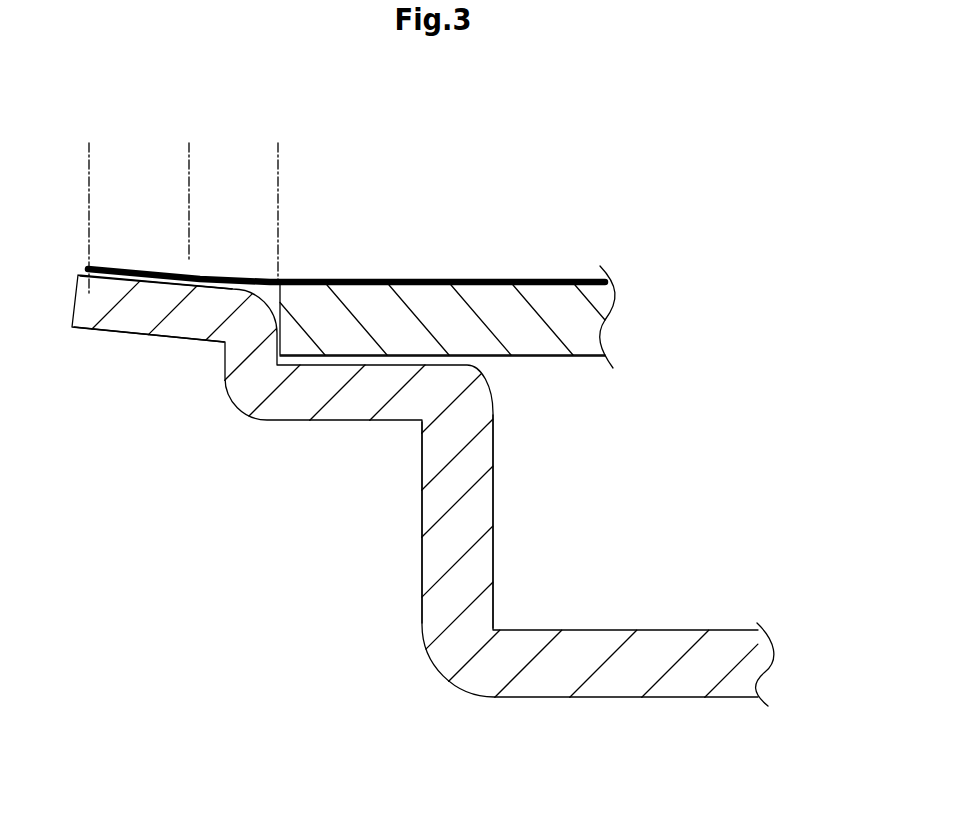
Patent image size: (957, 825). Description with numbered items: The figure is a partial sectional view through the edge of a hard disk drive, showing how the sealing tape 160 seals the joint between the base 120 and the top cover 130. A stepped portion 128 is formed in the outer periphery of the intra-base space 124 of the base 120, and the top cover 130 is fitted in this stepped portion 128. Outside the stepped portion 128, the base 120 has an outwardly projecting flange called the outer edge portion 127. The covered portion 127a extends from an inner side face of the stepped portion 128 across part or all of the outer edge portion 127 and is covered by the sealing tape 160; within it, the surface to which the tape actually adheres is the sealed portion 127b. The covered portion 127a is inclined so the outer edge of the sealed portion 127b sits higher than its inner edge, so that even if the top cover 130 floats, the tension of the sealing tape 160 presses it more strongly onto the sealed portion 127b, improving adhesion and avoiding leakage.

The base 120 is at (423, 490).
The intra-base space 124 is at (493, 572).
The outer edge portion 127 is at (185, 337).
The covered portion 127a is at (92, 216).
The sealed portion 127b is at (92, 175).
The stepped portion 128 is at (352, 362).
The top cover 130 is at (530, 345).
The sealing tape 160 is at (252, 280).